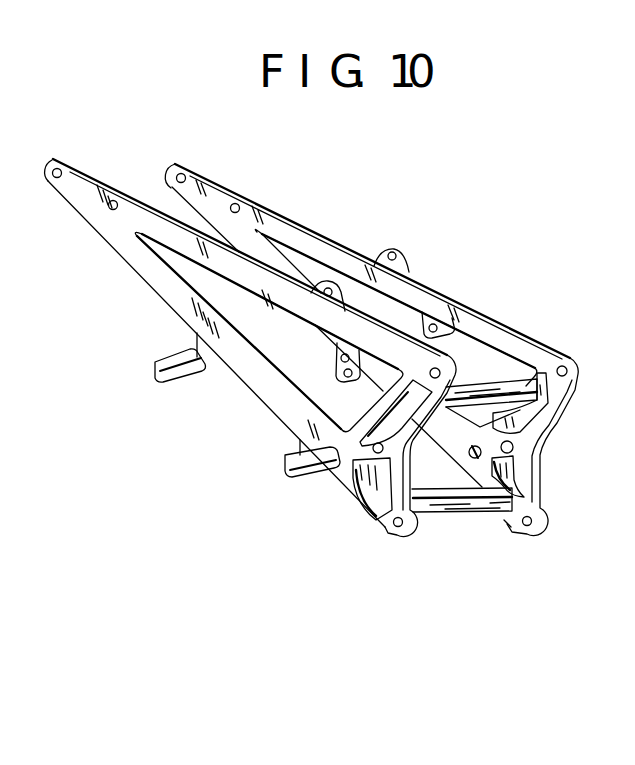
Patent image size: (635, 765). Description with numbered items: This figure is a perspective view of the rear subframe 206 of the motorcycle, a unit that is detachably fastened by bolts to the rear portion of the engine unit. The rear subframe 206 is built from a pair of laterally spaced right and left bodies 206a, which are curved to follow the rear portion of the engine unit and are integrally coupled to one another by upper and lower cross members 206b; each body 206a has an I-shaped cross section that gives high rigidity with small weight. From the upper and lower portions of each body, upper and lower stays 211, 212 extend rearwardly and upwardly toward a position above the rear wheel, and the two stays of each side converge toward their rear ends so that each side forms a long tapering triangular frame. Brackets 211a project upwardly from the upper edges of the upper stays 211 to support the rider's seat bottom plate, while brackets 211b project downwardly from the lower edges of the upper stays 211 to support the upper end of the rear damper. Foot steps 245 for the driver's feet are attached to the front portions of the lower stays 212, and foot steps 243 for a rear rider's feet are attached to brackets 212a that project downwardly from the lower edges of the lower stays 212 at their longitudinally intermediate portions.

The rear subframe 206 is at (422, 232).
The bodies 206a is at (523, 453).
The cross members 206b is at (497, 388).
The upper stays 211 is at (297, 300).
The brackets 211a is at (312, 288).
The brackets 211b is at (345, 358).
The lower stays 212 is at (260, 375).
The brackets 212a is at (197, 345).
The foot steps 243 is at (163, 378).
The foot steps 245 is at (303, 473).